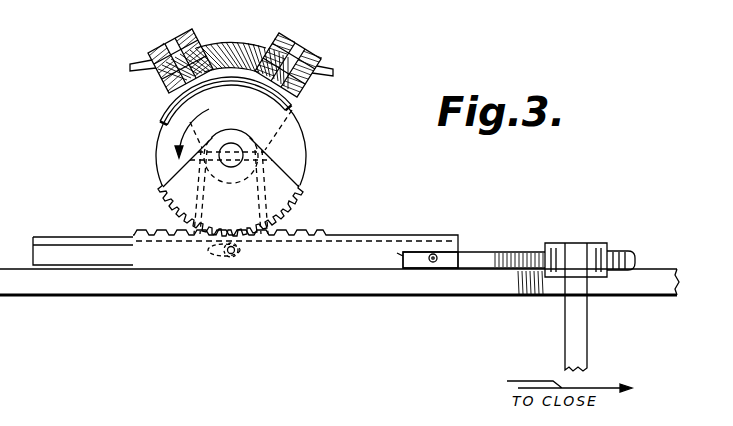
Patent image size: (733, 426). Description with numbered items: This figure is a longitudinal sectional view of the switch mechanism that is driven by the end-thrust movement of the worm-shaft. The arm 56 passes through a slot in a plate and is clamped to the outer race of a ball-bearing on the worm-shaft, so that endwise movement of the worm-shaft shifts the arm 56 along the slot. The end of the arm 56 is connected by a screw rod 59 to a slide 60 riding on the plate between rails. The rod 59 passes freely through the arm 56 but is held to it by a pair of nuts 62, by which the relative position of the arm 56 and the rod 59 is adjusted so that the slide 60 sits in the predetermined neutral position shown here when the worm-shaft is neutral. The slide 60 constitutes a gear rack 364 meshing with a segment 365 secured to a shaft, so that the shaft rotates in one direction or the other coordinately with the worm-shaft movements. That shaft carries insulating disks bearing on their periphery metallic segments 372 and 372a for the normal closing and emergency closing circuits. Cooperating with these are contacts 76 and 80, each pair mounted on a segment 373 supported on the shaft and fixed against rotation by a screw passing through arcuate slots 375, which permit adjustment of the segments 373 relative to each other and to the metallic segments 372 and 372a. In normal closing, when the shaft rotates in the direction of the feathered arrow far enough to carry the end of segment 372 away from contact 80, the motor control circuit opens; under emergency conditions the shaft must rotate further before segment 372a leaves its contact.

The arm 56 is at (577, 331).
The screw rod 59 is at (647, 229).
The slide 60 is at (457, 238).
The nuts 62 is at (602, 244).
The contact 76 is at (199, 52).
The contact 80 is at (267, 60).
The gear rack 364 is at (163, 233).
The segment 365 is at (268, 175).
The metallic segment 372 is at (239, 78).
The metallic segment 372a is at (293, 111).
The segment 373 is at (172, 91).
The arcuate slots 375 is at (214, 254).